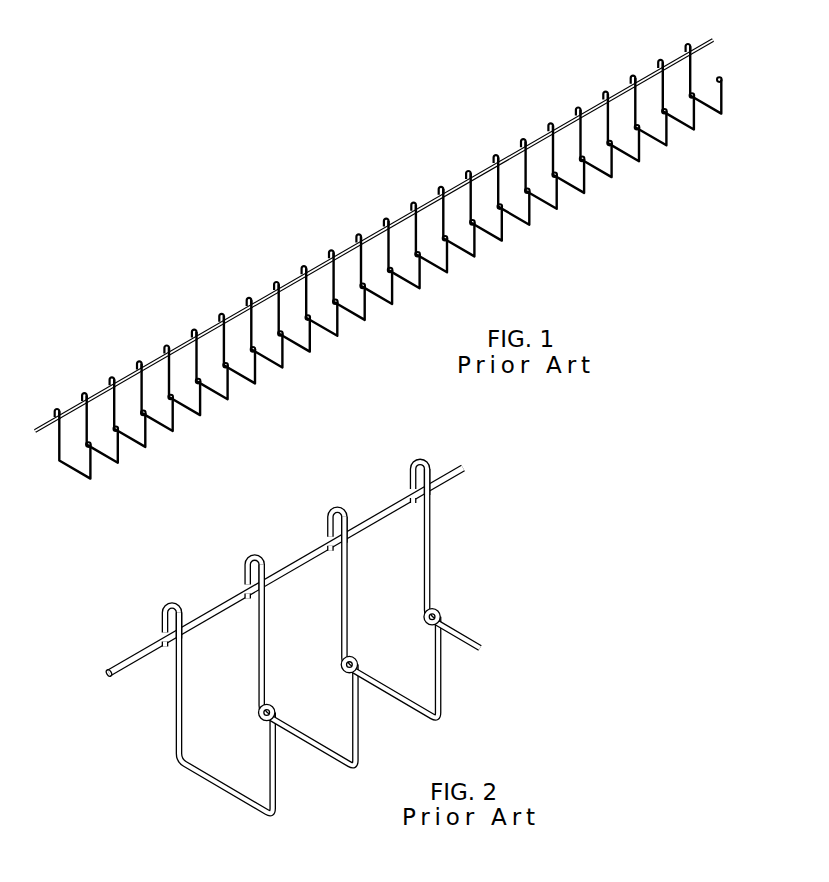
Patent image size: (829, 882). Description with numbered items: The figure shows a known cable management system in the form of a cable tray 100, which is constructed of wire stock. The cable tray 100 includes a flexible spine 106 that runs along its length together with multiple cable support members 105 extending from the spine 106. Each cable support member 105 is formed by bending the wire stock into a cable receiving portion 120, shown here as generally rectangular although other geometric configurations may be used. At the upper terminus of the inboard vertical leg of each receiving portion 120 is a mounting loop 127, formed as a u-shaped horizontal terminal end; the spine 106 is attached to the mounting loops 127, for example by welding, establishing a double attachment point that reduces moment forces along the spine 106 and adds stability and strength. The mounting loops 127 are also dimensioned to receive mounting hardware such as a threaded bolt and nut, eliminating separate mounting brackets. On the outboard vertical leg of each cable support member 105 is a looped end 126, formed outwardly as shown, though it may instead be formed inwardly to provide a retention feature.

In FIG. 1, the cable tray 100 is at (233, 283).
In FIG. 2, the cable tray 100 is at (232, 530).
In FIG. 2, the cable support member 105 is at (174, 713).
In FIG. 2, the flexible spine 106 is at (370, 520).
In FIG. 2, the cable receiving portion 120 is at (205, 692).
In FIG. 2, the looped end 126 is at (275, 706).
In FIG. 2, the mounting loop 127 is at (171, 604).